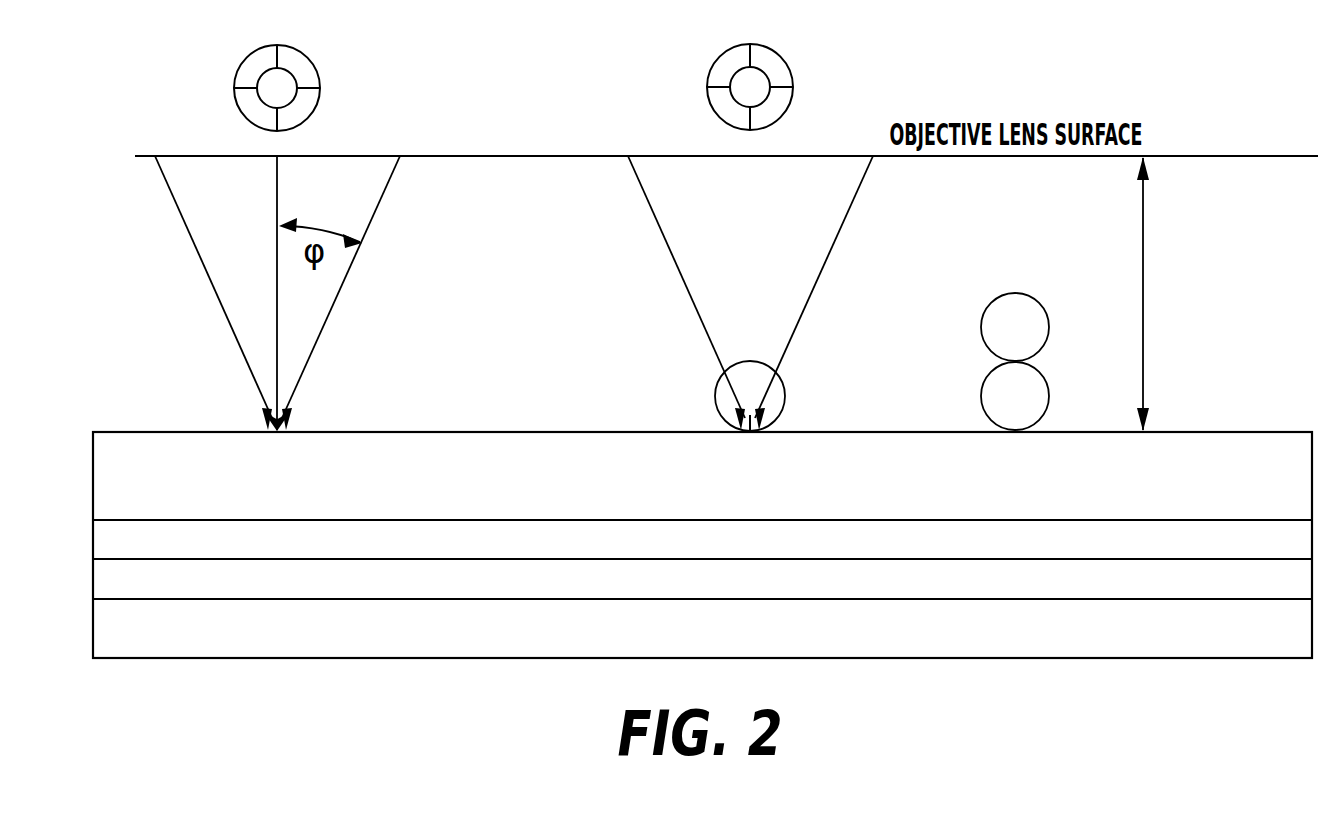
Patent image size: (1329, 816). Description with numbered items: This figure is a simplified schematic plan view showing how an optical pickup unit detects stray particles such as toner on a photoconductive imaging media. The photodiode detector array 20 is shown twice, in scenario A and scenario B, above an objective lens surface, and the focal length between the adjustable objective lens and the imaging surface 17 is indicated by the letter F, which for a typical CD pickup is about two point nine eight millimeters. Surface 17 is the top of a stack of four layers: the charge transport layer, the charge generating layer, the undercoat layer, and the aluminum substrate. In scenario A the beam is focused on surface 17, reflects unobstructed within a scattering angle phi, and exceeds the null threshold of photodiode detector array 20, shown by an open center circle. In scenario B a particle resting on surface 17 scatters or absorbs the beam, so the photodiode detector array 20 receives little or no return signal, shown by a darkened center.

The photodiode detector array 20 is at (473, 67).
The imaging surface 17 is at (1216, 426).
The scenario A is at (277, 67).
The scenario B is at (750, 67).
The focal length F is at (1156, 294).